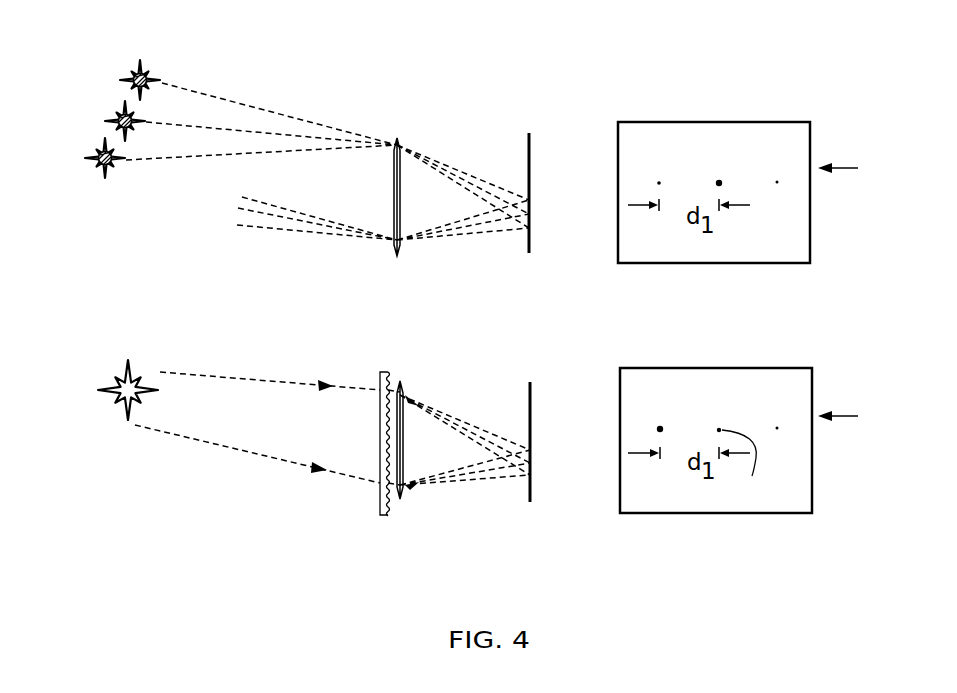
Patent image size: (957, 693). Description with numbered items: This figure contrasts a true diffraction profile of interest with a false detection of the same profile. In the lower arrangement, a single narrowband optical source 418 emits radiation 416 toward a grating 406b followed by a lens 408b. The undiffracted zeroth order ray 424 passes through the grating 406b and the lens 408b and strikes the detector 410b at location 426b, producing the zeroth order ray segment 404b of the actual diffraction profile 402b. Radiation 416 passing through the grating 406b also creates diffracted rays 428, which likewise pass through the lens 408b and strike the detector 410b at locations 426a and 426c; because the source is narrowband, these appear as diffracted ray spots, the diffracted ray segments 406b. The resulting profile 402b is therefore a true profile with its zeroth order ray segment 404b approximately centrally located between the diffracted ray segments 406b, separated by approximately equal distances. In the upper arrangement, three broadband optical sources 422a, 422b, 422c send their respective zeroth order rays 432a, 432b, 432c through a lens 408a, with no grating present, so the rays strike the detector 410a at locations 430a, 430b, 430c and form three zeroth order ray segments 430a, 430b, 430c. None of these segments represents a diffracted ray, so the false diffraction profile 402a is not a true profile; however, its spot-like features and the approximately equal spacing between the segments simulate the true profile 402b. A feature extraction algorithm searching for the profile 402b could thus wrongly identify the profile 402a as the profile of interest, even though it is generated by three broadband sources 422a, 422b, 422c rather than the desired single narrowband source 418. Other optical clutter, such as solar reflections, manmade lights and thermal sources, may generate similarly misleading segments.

The false diffraction profile 402a is at (861, 163).
The actual diffraction profile 402b is at (861, 411).
The zeroth order ray segment 404b is at (735, 467).
The grating 406b is at (380, 514).
The lens 408a is at (396, 139).
The lens 408b is at (399, 500).
The detector 410a is at (530, 160).
The detector 410b is at (531, 408).
The radiation 416 is at (262, 380).
The narrowband optical source 418 is at (128, 421).
The broadband optical source 422a is at (127, 82).
The broadband optical source 422b is at (108, 122).
The broadband optical source 422c is at (94, 158).
The zeroth order ray 424 is at (477, 480).
The location 426a is at (606, 431).
The location 426b is at (635, 441).
The location 426c is at (664, 451).
The diffracted rays 428 is at (453, 413).
The zeroth order ray segment 430a is at (655, 163).
The zeroth order ray segment 430b is at (716, 163).
The zeroth order ray segment 430c is at (774, 162).
The zeroth order ray 432a is at (445, 166).
The zeroth order ray 432b is at (492, 189).
The zeroth order ray 432c is at (468, 188).